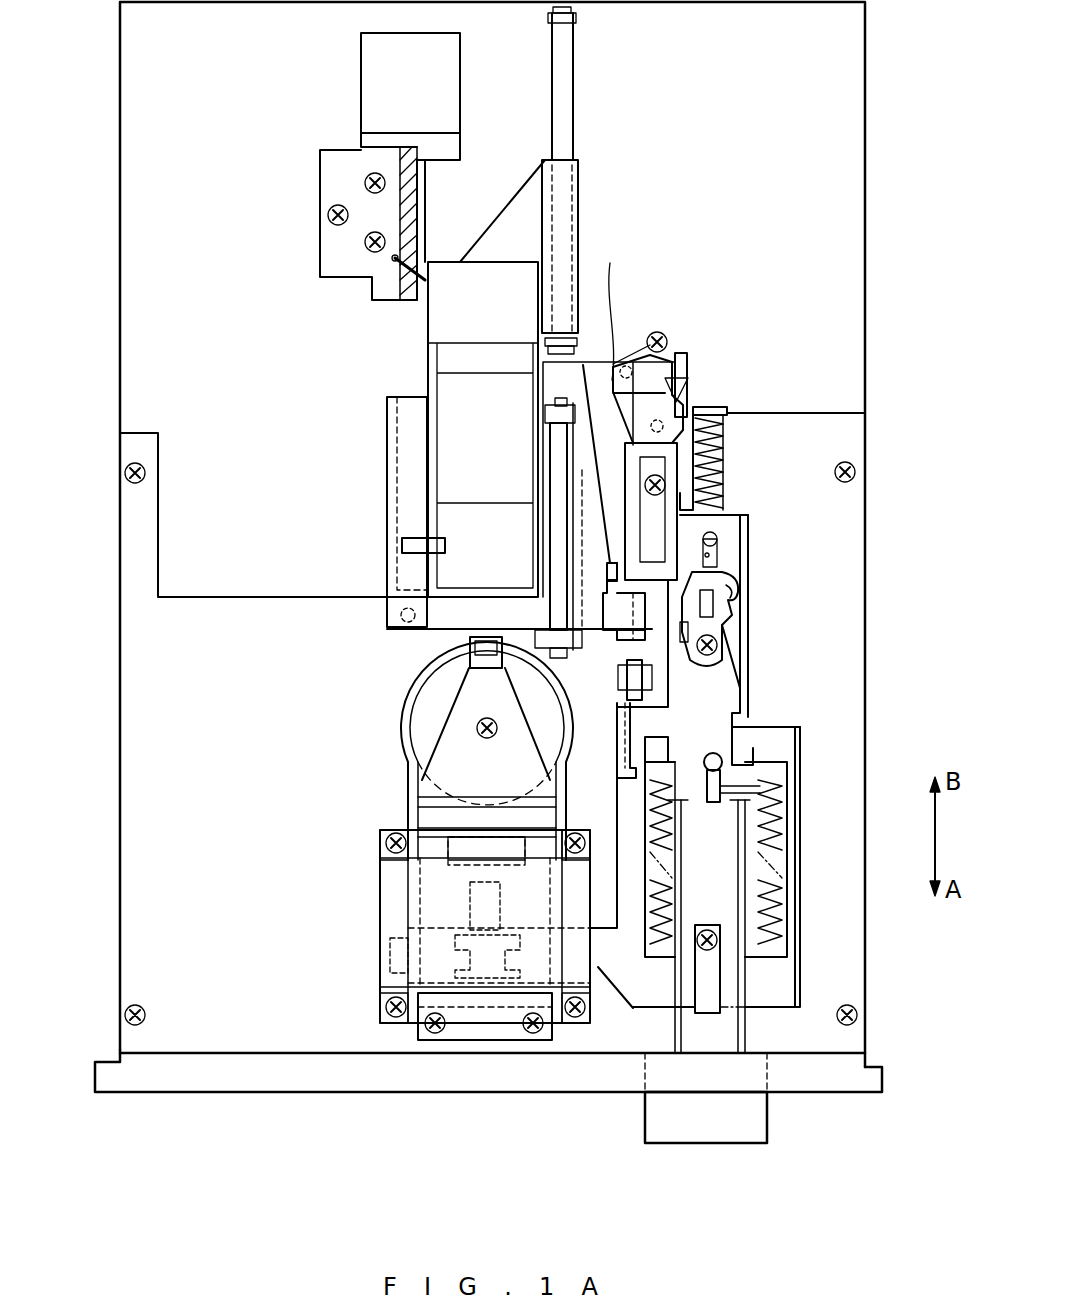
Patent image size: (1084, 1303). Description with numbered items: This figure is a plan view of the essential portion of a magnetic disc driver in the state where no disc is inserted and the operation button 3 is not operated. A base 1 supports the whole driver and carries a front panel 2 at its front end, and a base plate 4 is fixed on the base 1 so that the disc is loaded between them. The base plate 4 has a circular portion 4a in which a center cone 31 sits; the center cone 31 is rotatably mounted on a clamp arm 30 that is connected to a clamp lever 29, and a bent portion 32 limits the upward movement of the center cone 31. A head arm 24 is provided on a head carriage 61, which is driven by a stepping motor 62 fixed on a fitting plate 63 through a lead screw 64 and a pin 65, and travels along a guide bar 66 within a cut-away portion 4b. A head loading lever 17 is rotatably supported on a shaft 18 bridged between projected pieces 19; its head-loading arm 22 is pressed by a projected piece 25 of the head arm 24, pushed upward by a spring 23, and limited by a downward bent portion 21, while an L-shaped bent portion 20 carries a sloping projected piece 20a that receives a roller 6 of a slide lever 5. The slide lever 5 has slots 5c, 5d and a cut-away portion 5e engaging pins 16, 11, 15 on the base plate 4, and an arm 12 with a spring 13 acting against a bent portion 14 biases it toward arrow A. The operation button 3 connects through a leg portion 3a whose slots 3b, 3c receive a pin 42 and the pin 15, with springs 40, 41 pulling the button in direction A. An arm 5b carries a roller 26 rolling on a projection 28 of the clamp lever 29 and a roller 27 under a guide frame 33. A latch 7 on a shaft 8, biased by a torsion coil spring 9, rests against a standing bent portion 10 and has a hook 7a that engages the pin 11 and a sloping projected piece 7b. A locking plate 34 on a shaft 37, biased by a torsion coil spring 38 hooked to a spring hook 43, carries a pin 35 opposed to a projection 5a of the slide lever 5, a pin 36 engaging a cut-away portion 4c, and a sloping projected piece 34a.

The base 1 is at (865, 600).
The front panel 2 is at (882, 1080).
The operation button 3 is at (767, 1140).
The leg portion 3a is at (723, 875).
The slot 3b is at (737, 790).
The slot 3c is at (720, 1007).
The base plate 4 is at (840, 996).
The circular portion 4a is at (553, 747).
The cut-away portion 4b is at (240, 598).
The cut-away portion 4c is at (599, 308).
The slide lever 5 is at (788, 750).
The projection 5a is at (690, 380).
The arm 5b is at (598, 970).
The slot 5c is at (710, 515).
The slot 5d is at (663, 565).
The cut-away portion 5e is at (698, 992).
The roller 6 is at (635, 712).
The latch 7 is at (740, 635).
The hook 7a is at (738, 590).
The projected piece 7b is at (715, 605).
The shaft 8 is at (720, 650).
The torsion coil spring 9 is at (745, 705).
The standing bent portion 10 is at (748, 550).
The pin 11 is at (717, 537).
The arm 12 is at (728, 450).
The spring 13 is at (752, 412).
The bent portion 14 is at (725, 410).
The pin 15 is at (720, 947).
The pin 16 is at (647, 470).
The head loading lever 17 is at (583, 365).
The shaft 18 is at (558, 473).
The projected piece 19 is at (547, 408).
The bent portion 20 is at (620, 612).
The projected piece 20a is at (615, 642).
The downward bent portion 21 is at (610, 570).
The head-loading arm 22 is at (410, 400).
The spring 23 is at (400, 618).
The head arm 24 is at (455, 375).
The projected piece 25 is at (402, 547).
The roller 26 is at (455, 958).
The roller 27 is at (455, 935).
The projection 28 is at (470, 905).
The clamp lever 29 is at (425, 875).
The clamp arm 30 is at (447, 748).
The center cone 31 is at (423, 700).
The bent portion 32 is at (470, 645).
The guide frame 33 is at (385, 985).
The locking plate 34 is at (635, 335).
The projected piece 34a is at (703, 405).
The pin 35 is at (693, 400).
The pin 36 is at (625, 380).
The shaft 37 is at (668, 362).
The torsion coil spring 38 is at (640, 358).
The spring 40 is at (650, 910).
The spring 41 is at (782, 893).
The pin 42 is at (733, 763).
The spring hook 43 is at (688, 388).
The head carriage 61 is at (540, 183).
The stepping motor 62 is at (367, 72).
The fitting plate 63 is at (330, 172).
The lead screw 64 is at (408, 227).
The pin 65 is at (395, 262).
The guide bar 66 is at (563, 70).